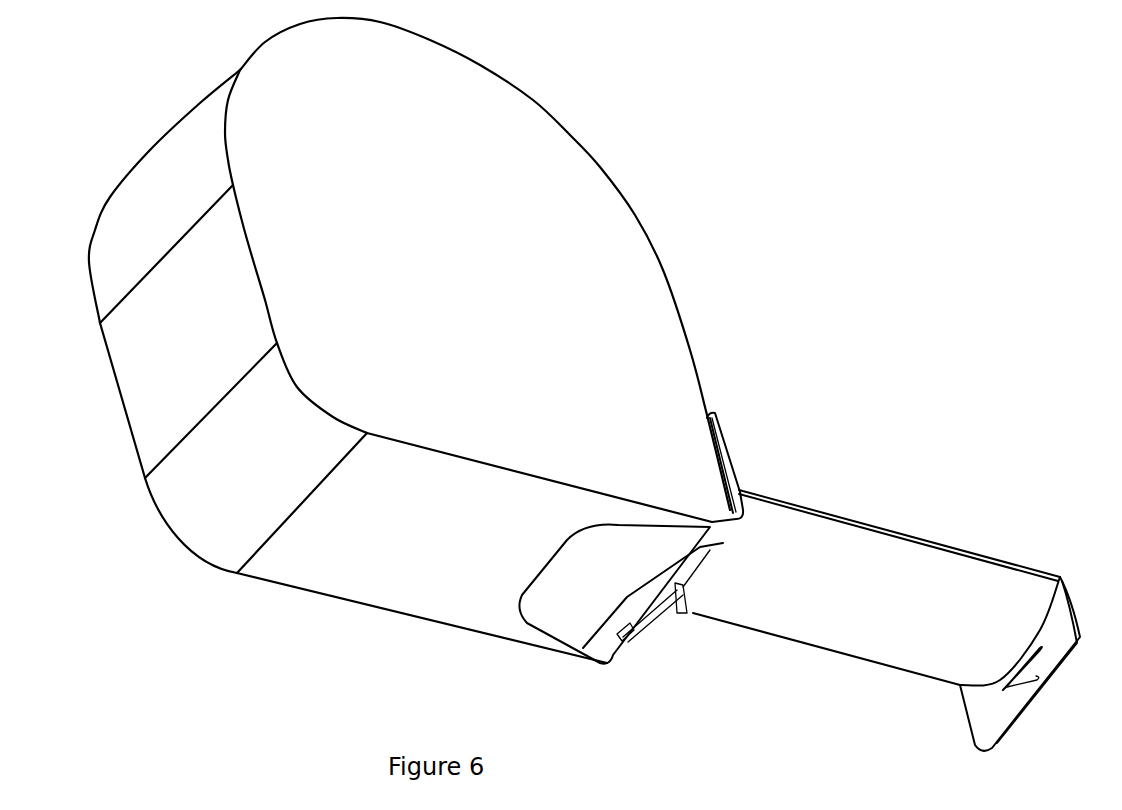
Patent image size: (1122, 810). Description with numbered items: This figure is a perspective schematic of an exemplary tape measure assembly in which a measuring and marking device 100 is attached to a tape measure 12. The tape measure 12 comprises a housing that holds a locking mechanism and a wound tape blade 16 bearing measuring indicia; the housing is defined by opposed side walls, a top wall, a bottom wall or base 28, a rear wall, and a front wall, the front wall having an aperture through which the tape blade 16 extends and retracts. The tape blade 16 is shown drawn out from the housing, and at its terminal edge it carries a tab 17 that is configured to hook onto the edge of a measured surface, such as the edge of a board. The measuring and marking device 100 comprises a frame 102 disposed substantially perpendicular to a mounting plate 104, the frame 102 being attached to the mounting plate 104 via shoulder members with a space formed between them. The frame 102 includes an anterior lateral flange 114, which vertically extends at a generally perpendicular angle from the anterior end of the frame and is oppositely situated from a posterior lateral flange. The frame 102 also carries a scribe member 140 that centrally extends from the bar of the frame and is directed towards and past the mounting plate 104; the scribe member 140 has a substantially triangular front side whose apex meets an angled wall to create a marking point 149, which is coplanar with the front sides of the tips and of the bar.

The tape measure 12 is at (694, 236).
The tape blade 16 is at (850, 545).
The tab 17 is at (1013, 687).
The bottom wall or base 28 is at (423, 603).
The measuring and marking device 100 is at (586, 606).
The frame 102 is at (732, 422).
The mounting plate 104 is at (627, 550).
The anterior lateral flange 114 is at (724, 453).
The scribe member 140 is at (700, 603).
The marking point 149 is at (665, 600).